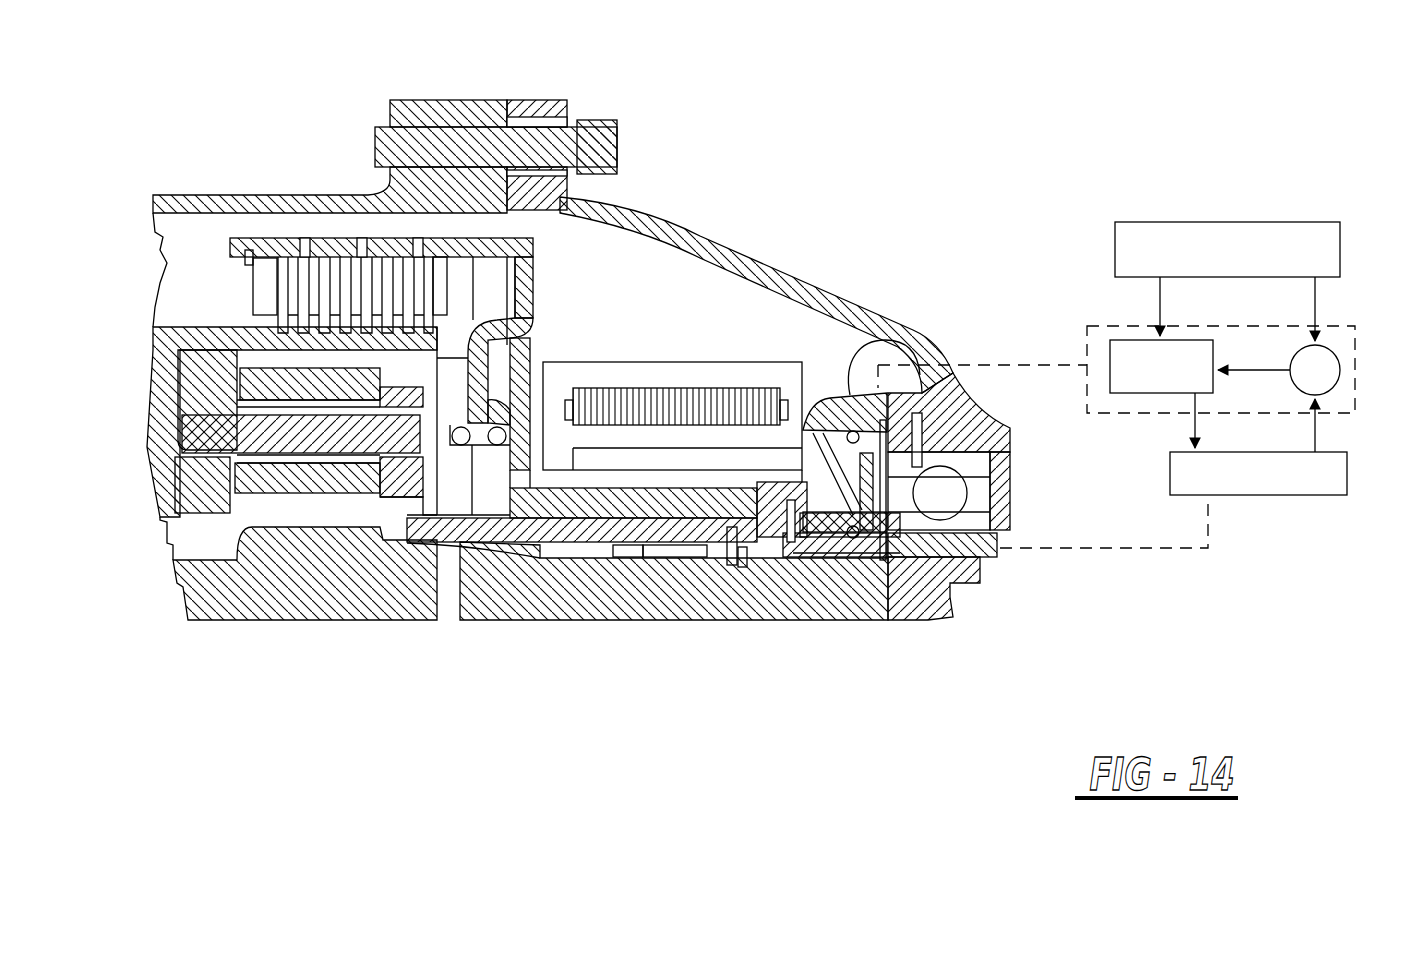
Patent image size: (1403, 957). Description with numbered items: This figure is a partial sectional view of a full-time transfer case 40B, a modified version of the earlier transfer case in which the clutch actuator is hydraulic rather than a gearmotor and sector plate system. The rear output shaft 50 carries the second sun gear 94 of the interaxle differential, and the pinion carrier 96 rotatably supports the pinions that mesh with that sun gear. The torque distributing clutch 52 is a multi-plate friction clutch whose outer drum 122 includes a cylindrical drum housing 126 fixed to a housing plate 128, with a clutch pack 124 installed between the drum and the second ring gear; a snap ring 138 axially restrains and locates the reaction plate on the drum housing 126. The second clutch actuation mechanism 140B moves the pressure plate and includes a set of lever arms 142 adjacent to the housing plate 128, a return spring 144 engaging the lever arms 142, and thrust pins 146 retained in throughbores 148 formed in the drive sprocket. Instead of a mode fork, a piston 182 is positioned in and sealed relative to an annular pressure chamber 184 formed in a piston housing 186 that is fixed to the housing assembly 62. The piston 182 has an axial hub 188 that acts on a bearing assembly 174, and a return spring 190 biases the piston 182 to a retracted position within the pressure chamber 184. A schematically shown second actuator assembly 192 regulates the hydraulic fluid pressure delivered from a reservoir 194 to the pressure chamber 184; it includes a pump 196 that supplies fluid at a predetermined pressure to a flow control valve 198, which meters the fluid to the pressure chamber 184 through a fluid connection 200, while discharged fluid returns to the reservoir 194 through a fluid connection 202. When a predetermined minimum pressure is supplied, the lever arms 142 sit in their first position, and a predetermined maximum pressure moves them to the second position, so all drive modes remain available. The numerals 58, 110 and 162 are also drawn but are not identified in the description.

The full-time transfer case 40B is at (908, 186).
The rear output shaft 50 is at (523, 605).
The torque distributing clutch 52 is at (563, 261).
The controller 58 is at (1147, 222).
The housing assembly 62 is at (765, 267).
The second sun gear 94 is at (302, 518).
The pinion carrier 96 is at (400, 373).
The bearing 110 is at (415, 486).
The outer drum 122 is at (267, 234).
The clutch pack 124 is at (336, 280).
The cylindrical drum housing 126 is at (517, 235).
The housing plate 128 is at (522, 316).
The snap ring 138 is at (247, 268).
The second clutch actuation mechanism 140B is at (695, 356).
The lever arms 142 is at (507, 290).
The return spring 144 is at (452, 430).
The thrust pins 146 is at (708, 510).
The throughbores 148 is at (674, 514).
The pressure plate 162 is at (255, 300).
The bearing assembly 174 is at (792, 550).
The piston 182 is at (925, 545).
The annular pressure chamber 184 is at (888, 467).
The piston housing 186 is at (853, 370).
The axial hub 188 is at (912, 585).
The return spring 190 is at (832, 470).
The second actuator assembly 192 is at (1108, 322).
The reservoir 194 is at (1237, 495).
The pump 196 is at (1325, 358).
The flow control valve 198 is at (1130, 388).
The fluid connection 200 is at (1030, 358).
The fluid connection 202 is at (1095, 550).